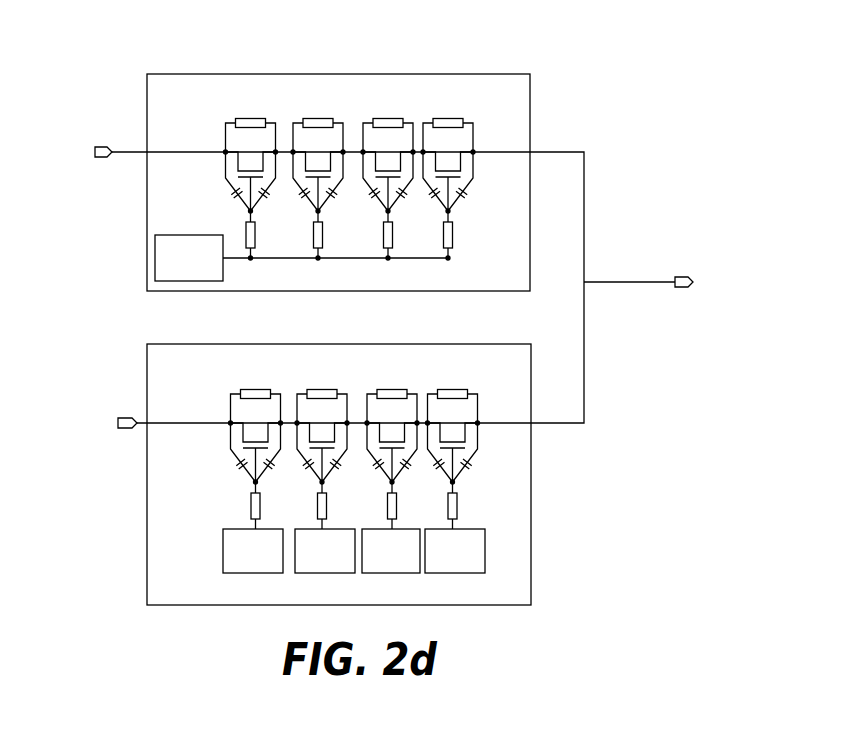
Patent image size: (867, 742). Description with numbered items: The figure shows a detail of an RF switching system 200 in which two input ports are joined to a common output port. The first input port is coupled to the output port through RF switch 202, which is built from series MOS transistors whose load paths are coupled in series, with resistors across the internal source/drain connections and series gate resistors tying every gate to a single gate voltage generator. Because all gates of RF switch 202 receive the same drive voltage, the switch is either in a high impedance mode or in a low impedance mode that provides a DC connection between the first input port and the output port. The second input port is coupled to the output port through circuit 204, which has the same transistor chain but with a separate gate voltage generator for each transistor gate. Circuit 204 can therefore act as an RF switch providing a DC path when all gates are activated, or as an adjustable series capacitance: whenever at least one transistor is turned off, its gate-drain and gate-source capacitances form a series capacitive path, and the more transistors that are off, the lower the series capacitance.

The RF switching system 200 is at (103, 68).
The RF switch 202 is at (245, 74).
The circuit 204 is at (250, 344).